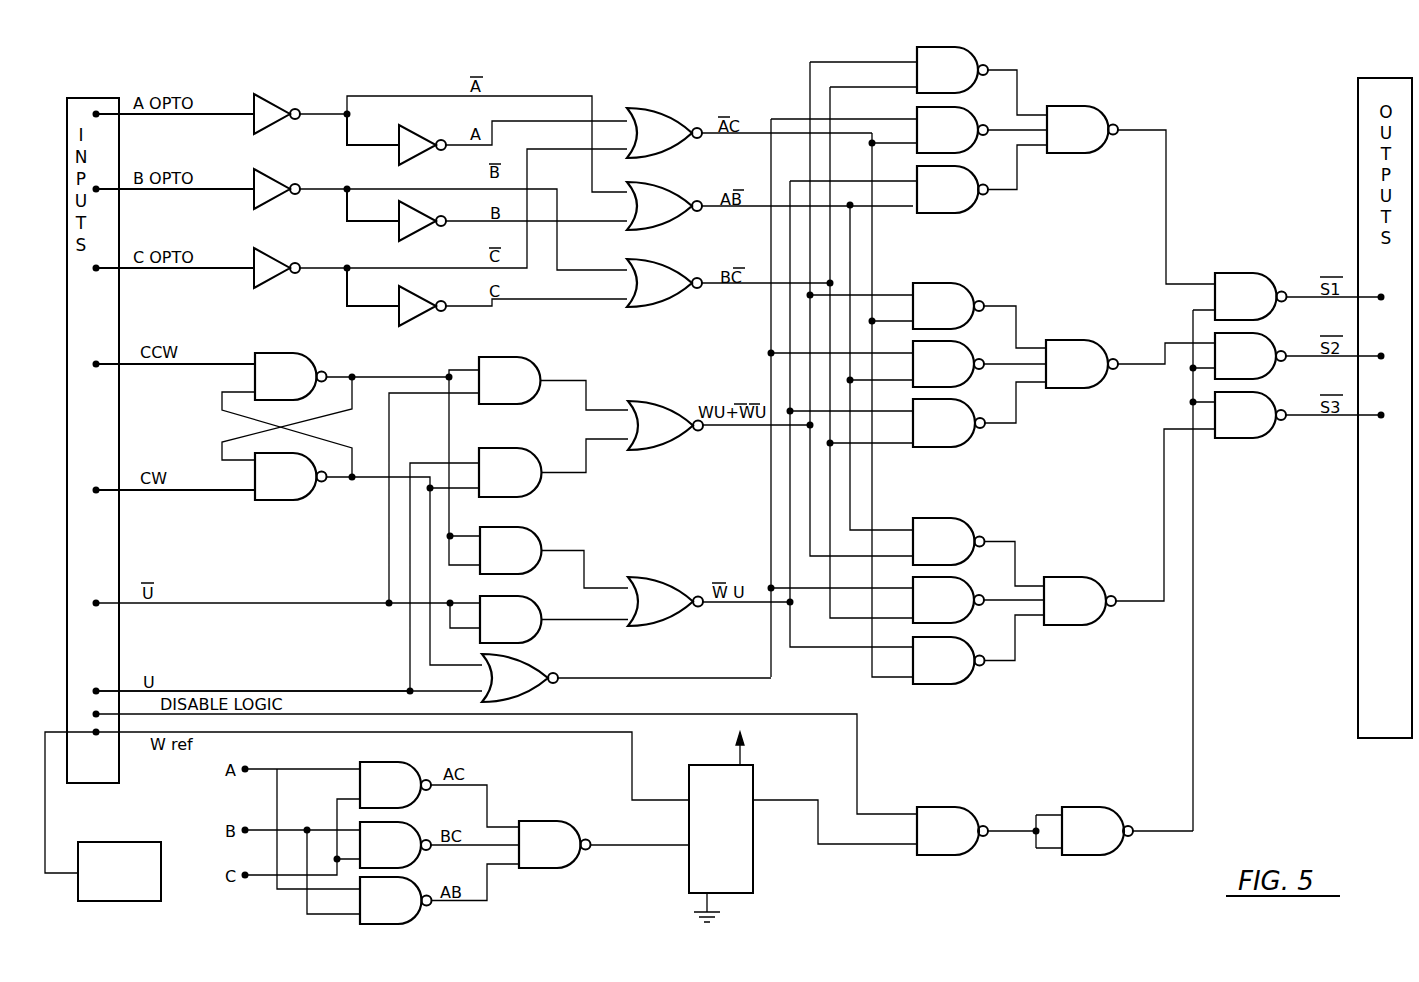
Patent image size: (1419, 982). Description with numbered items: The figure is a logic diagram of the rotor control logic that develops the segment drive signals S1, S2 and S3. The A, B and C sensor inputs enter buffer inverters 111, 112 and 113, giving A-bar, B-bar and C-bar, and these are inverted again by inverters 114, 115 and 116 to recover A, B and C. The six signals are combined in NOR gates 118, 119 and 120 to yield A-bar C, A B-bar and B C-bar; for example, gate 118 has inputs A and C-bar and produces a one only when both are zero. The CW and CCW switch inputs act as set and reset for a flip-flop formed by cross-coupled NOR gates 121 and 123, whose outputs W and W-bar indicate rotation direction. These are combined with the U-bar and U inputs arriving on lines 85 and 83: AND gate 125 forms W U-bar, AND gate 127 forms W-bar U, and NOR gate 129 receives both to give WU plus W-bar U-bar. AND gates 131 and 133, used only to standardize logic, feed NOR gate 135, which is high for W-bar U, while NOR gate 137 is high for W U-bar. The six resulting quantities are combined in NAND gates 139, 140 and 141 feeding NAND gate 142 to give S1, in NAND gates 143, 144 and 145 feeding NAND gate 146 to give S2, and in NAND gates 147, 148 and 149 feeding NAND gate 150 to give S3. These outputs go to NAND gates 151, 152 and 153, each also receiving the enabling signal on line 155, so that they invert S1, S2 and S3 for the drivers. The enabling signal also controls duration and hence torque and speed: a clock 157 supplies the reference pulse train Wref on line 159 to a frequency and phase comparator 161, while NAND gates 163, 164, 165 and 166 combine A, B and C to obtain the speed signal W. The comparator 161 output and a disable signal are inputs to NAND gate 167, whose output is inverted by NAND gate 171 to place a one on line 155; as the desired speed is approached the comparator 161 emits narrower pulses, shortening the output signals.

The line 83 is at (203, 691).
The line 85 is at (215, 603).
The buffer inverter 111 is at (277, 100).
The buffer inverter 112 is at (277, 176).
The buffer inverter 113 is at (277, 256).
The inverter 114 is at (424, 130).
The inverter 115 is at (430, 216).
The inverter 116 is at (430, 300).
The NOR gate 118 is at (670, 112).
The NOR gate 119 is at (680, 196).
The NOR gate 120 is at (690, 268).
The NOR gate 121 is at (304, 362).
The NOR gate 123 is at (300, 498).
The AND gate 125 is at (536, 362).
The AND gate 127 is at (510, 450).
The NOR gate 129 is at (657, 400).
The AND gate 131 is at (530, 536).
The AND gate 133 is at (544, 618).
The NOR gate 135 is at (657, 575).
The NOR gate 137 is at (550, 674).
The NAND gate 139 is at (964, 52).
The NAND gate 140 is at (956, 120).
The NAND gate 141 is at (956, 178).
The NAND gate 142 is at (1090, 114).
The NAND gate 143 is at (956, 292).
The NAND gate 144 is at (954, 356).
The NAND gate 145 is at (956, 412).
The NAND gate 146 is at (1070, 344).
The NAND gate 147 is at (948, 528).
The NAND gate 148 is at (950, 590).
The NAND gate 149 is at (954, 653).
The NAND gate 150 is at (1070, 580).
The NAND gate 151 is at (1232, 278).
The NAND gate 152 is at (1254, 346).
The NAND gate 153 is at (1252, 430).
The line 155 is at (1193, 634).
The clock 157 is at (118, 842).
The line 159 is at (296, 733).
The frequency and phase comparator 161 is at (746, 787).
The NAND gate 163 is at (392, 764).
The NAND gate 164 is at (418, 826).
The NAND gate 165 is at (418, 880).
The NAND gate 166 is at (544, 816).
The NAND gate 167 is at (940, 806).
The NAND gate 171 is at (1092, 808).